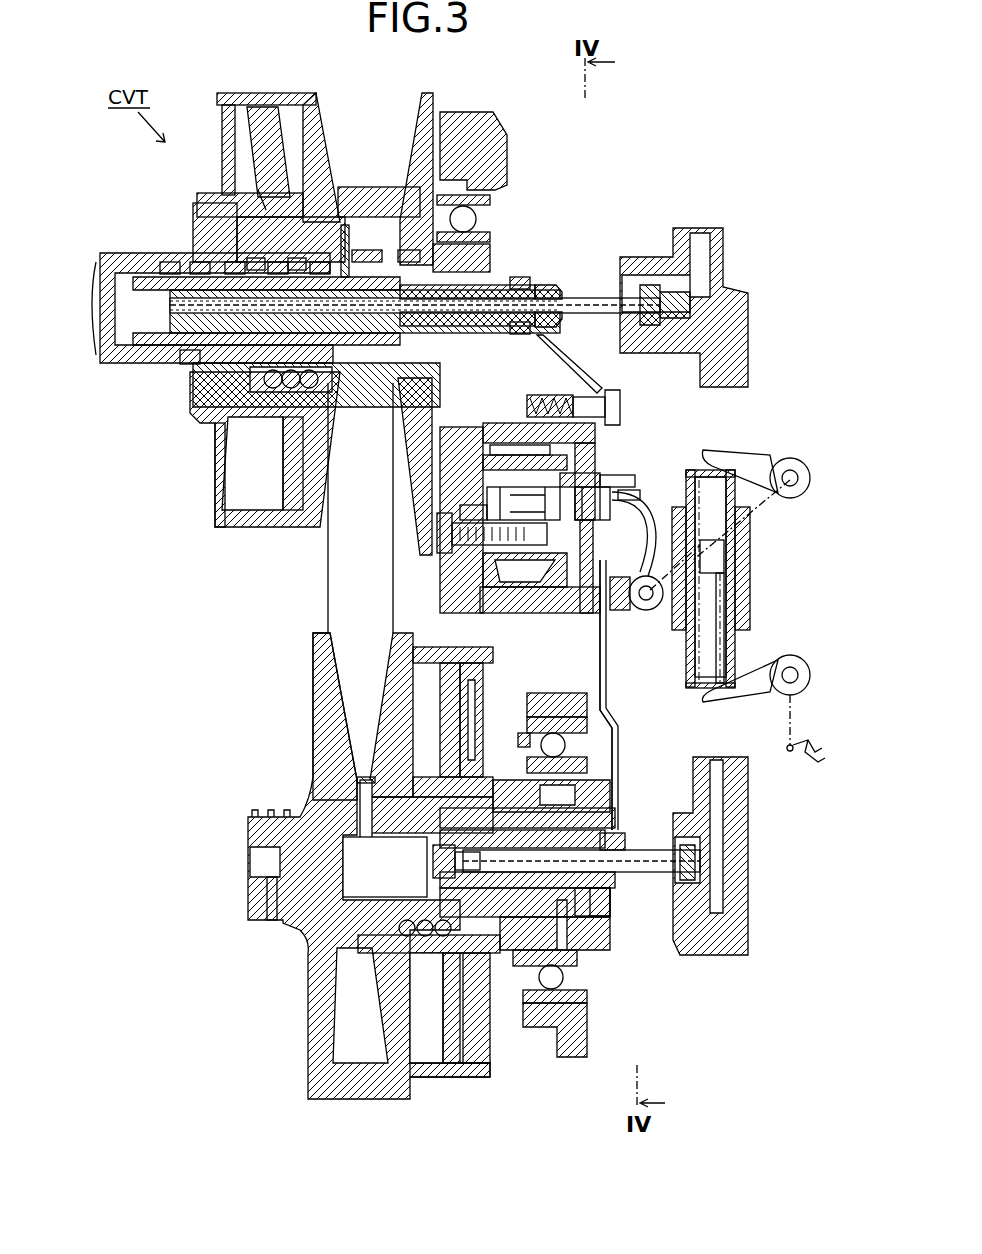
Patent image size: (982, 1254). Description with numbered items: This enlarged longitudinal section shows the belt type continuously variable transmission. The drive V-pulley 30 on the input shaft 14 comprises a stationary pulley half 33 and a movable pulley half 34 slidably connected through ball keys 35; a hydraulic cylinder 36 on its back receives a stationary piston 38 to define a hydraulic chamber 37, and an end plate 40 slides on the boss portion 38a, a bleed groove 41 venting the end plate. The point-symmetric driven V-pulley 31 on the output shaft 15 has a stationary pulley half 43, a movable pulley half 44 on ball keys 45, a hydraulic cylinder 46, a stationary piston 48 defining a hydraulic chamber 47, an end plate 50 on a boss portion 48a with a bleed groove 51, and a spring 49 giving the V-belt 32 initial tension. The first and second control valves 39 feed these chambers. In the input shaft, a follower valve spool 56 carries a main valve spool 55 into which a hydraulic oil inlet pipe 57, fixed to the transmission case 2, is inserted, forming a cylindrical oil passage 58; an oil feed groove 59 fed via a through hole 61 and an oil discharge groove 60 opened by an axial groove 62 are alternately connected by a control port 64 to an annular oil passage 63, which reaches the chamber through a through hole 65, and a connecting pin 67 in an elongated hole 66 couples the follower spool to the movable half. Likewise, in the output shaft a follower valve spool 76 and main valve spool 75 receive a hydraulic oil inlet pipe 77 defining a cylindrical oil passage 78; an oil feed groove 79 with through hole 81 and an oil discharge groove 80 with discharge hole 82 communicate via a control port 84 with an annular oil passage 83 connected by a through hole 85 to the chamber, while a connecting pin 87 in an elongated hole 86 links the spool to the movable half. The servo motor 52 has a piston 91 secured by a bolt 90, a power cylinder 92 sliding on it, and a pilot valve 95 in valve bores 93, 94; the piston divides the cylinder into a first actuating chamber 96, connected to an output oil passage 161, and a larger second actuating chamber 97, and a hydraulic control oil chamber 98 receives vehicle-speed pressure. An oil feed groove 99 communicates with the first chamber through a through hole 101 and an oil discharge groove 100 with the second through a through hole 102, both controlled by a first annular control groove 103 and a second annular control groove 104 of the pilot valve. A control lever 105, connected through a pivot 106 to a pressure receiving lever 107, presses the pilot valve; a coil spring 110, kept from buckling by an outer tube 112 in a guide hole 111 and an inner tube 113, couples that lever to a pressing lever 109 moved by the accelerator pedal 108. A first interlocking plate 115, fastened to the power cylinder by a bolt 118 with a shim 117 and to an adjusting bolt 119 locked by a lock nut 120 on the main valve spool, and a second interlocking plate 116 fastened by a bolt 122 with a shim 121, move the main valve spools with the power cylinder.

The transmission case 2 is at (480, 128).
The input shaft 14 is at (143, 268).
The output shaft 15 is at (255, 830).
The drive V-pulley 30 is at (408, 72).
The driven V-pulley 31 is at (390, 604).
The V-belt 32 is at (373, 188).
The stationary pulley half 33 is at (425, 110).
The movable pulley half 34 is at (276, 294).
The ball keys 35 is at (300, 370).
The hydraulic cylinder 36 is at (258, 93).
The hydraulic chamber 37 is at (322, 135).
The stationary piston 38 is at (290, 128).
The boss portion 38a is at (262, 196).
The control valve 39 is at (192, 362).
The end plate 40 is at (226, 166).
The bleed groove 41 is at (200, 205).
The stationary pulley half 43 is at (340, 640).
The movable pulley half 44 is at (392, 640).
The ball keys 45 is at (429, 926).
The hydraulic cylinder 46 is at (443, 1072).
The hydraulic chamber 47 is at (436, 1028).
The stationary piston 48 is at (445, 722).
The boss portion 48a is at (510, 728).
The spring 49 is at (583, 781).
The end plate 50 is at (485, 687).
The bleed groove 51 is at (518, 740).
The hydraulic servo motor 52 is at (541, 617).
The main valve spool 55 is at (418, 290).
The follower valve spool 56 is at (367, 263).
The hydraulic oil inlet pipe 57 is at (415, 302).
The cylindrical oil passage 58 is at (295, 261).
The annular oil feed groove 59 is at (234, 266).
The annular oil discharge groove 60 is at (276, 266).
The through hole 61 is at (196, 265).
The axial groove 62 is at (318, 266).
The annular oil passage 63 is at (172, 265).
The control port 64 is at (255, 261).
The through hole 65 is at (205, 230).
The elongated hole 66 is at (406, 248).
The connecting pin 67 is at (350, 244).
The main valve spool 75 is at (620, 846).
The follower valve spool 76 is at (385, 867).
The hydraulic oil inlet pipe 77 is at (655, 872).
The cylindrical oil passage 78 is at (592, 898).
The annular oil feed groove 79 is at (555, 924).
The annular oil discharge groove 80 is at (525, 903).
The through hole 81 is at (550, 964).
The discharge hole 82 is at (456, 861).
The annular oil passage 83 is at (527, 825).
The control port 84 is at (505, 898).
The oil chamber 85 is at (440, 960).
The elongated hole 86 is at (406, 816).
The connecting pin 87 is at (364, 816).
The bolt 90 is at (437, 544).
The piston 91 is at (589, 469).
The power cylinder 92 is at (560, 606).
The valve bore 93 is at (523, 447).
The valve bore 94 is at (609, 683).
The pilot valve 95 is at (523, 502).
The first actuating chamber 96 is at (540, 432).
The second actuating chamber 97 is at (597, 476).
The hydraulic control oil chamber 98 is at (470, 512).
The annular oil feed groove 99 is at (592, 502).
The annular oil discharge groove 100 is at (630, 492).
The through hole 101 is at (525, 590).
The through hole 102 is at (626, 469).
The first annular control groove 103 is at (537, 499).
The second annular control groove 104 is at (634, 534).
The control lever 105 is at (660, 575).
The pivot 106 is at (647, 605).
The pressure receiving lever 107 is at (750, 456).
The accelerator pedal 108 is at (800, 756).
The pressing lever 109 is at (747, 706).
The coil spring 110 is at (690, 662).
The guide hole 111 is at (738, 612).
The outer tube 112 is at (692, 470).
The inner tube 113 is at (725, 660).
The first interlocking plate 115 is at (566, 352).
The second interlocking plate 116 is at (615, 719).
The shim 117 is at (592, 395).
The bolt 118 is at (620, 402).
The adjusting bolt 119 is at (552, 287).
The lock nut 120 is at (520, 277).
The shim 121 is at (588, 614).
The bolt 122 is at (620, 610).
The output oil passage 161 is at (463, 472).